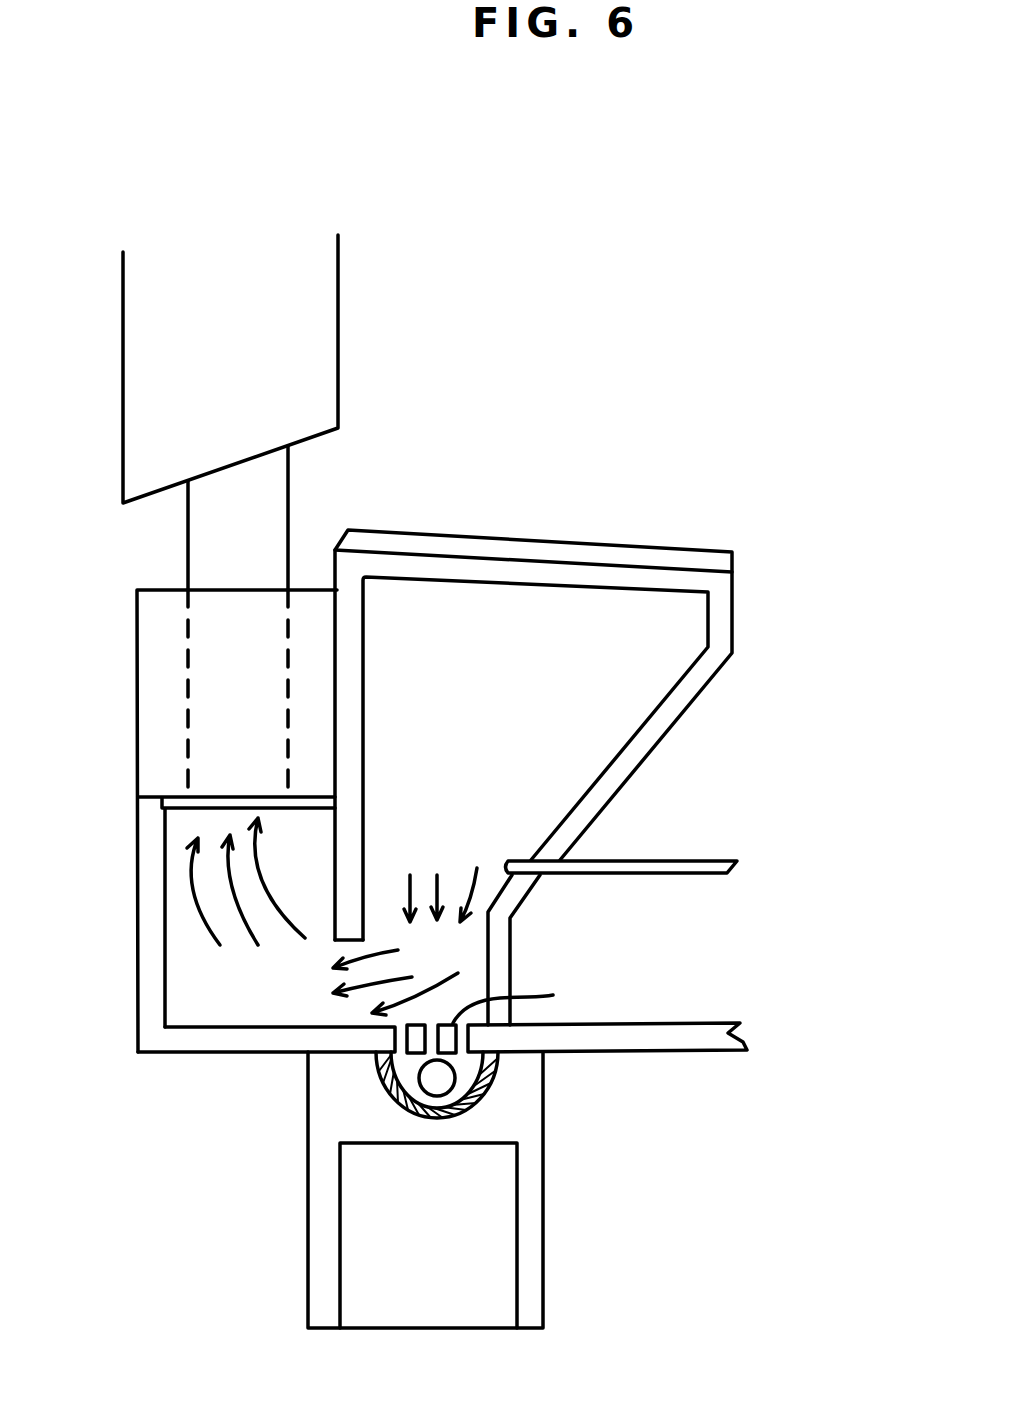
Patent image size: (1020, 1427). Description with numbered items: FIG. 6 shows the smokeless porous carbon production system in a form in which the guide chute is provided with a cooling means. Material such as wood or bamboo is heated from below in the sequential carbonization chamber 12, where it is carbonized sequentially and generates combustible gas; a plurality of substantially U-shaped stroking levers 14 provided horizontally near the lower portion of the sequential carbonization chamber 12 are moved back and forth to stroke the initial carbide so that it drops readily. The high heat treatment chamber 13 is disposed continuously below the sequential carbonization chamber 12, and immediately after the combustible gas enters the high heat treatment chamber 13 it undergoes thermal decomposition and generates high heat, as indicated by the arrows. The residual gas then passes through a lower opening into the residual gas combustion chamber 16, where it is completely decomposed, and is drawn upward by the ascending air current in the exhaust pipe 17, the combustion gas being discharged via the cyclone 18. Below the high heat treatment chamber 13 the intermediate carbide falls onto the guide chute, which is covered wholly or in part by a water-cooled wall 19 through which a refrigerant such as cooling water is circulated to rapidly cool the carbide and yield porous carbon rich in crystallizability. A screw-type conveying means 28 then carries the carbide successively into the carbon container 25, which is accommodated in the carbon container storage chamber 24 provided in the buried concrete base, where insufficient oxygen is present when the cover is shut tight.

The sequential carbonization chamber 12 is at (563, 740).
The high heat treatment chamber 13 is at (443, 957).
The stroking levers 14 is at (640, 857).
The residual gas combustion chamber 16 is at (228, 987).
The exhaust pipe 17 is at (267, 507).
The cyclone 18 is at (300, 288).
The water-cooled wall 19 is at (453, 1112).
The carbon container storage chamber 24 is at (327, 1188).
The carbon container 25 is at (485, 1223).
The screw-type conveying means 28 is at (440, 1080).